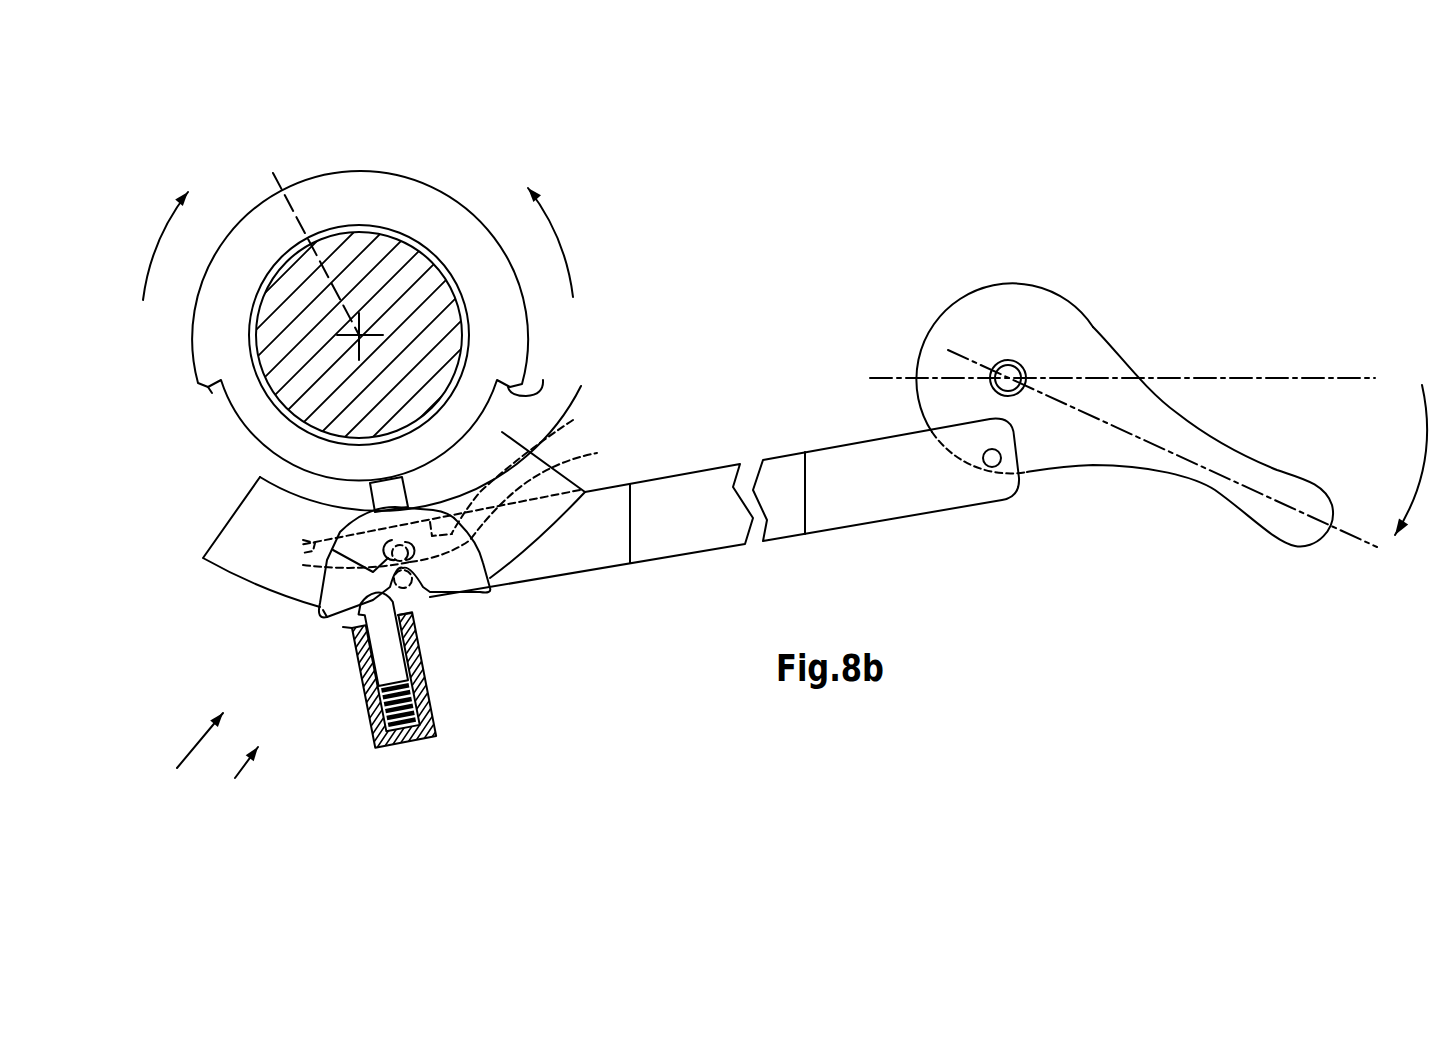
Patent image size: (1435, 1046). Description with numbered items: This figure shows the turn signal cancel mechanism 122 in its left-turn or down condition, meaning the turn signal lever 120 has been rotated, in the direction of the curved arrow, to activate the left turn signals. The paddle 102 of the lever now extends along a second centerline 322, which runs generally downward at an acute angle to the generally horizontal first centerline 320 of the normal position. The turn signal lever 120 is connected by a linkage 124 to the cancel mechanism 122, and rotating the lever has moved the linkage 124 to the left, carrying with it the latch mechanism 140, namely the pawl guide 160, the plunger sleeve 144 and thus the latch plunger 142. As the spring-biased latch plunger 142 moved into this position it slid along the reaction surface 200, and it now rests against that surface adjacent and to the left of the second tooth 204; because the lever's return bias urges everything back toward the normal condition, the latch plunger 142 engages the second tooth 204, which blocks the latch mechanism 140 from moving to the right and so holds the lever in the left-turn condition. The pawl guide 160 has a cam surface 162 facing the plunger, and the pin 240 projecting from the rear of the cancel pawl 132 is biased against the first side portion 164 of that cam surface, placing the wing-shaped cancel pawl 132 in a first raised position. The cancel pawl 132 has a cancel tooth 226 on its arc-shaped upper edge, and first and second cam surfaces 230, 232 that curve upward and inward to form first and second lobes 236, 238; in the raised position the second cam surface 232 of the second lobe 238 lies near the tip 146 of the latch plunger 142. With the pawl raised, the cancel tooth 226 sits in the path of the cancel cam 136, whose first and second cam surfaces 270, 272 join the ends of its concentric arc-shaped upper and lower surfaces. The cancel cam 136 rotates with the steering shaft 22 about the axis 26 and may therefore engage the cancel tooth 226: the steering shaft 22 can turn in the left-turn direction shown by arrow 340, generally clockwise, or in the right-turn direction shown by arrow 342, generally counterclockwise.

The steering shaft 22 is at (410, 272).
The axis 26 is at (321, 251).
The cancel cam 136 is at (375, 202).
The arrow 340 is at (155, 227).
The arrow 342 is at (563, 231).
The second cam surface 272 is at (212, 393).
The first cam surface 270 is at (543, 380).
The cancel tooth 226 is at (581, 386).
The first side portion 164 is at (573, 420).
The pin 240 is at (597, 453).
The pawl guide 160 is at (305, 540).
The cam surface 162 is at (303, 565).
The cancel pawl 132 is at (350, 590).
The first lobe 236 is at (460, 567).
The first cam surface 230 is at (450, 593).
The second lobe 238 is at (323, 610).
The second cam surface 232 is at (343, 627).
The tip 146 is at (360, 645).
The second tooth 204 is at (420, 633).
The latch plunger 142 is at (385, 665).
The plunger sleeve 144 is at (368, 725).
The reaction surface 200 is at (407, 603).
The cancel mechanism 122 is at (183, 752).
The latch mechanism 140 is at (232, 780).
The linkage 124 is at (687, 527).
The turn signal lever 120 is at (1038, 343).
The paddle 102 is at (1200, 480).
The first centerline 320 is at (1252, 377).
The second centerline 322 is at (1377, 547).